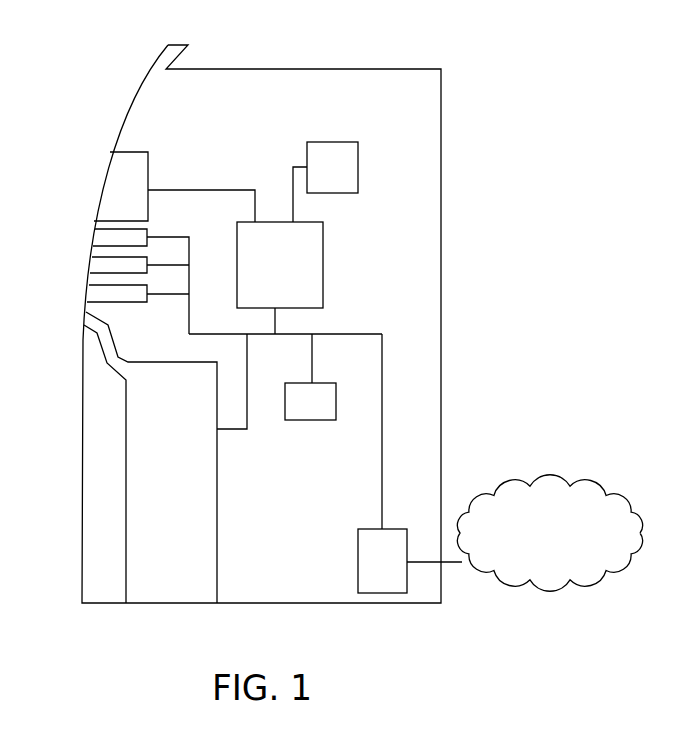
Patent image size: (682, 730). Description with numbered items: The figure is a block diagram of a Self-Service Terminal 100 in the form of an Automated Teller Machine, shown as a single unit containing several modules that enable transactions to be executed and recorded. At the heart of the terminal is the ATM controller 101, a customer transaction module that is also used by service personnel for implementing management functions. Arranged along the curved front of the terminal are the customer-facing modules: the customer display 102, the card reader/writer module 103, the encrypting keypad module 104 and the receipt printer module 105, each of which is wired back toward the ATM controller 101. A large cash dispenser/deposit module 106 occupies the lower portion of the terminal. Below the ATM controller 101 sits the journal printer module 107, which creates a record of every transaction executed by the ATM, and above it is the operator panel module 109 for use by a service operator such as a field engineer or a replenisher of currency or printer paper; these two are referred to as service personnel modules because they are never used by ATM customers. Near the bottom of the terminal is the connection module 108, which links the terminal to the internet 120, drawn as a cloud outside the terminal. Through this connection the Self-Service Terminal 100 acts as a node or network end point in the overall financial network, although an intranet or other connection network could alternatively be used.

The self-service terminal 100 is at (477, 114).
The ATM controller 101 is at (310, 267).
The customer display 102 is at (103, 180).
The card reader/writer module 103 is at (100, 237).
The encrypting keypad module 104 is at (98, 267).
The receipt printer module 105 is at (93, 294).
The cash dispenser/deposit module 106 is at (135, 487).
The journal printer module 107 is at (300, 413).
The connection module 108 is at (370, 563).
The operator panel module 109 is at (341, 152).
The internet 120 is at (533, 550).